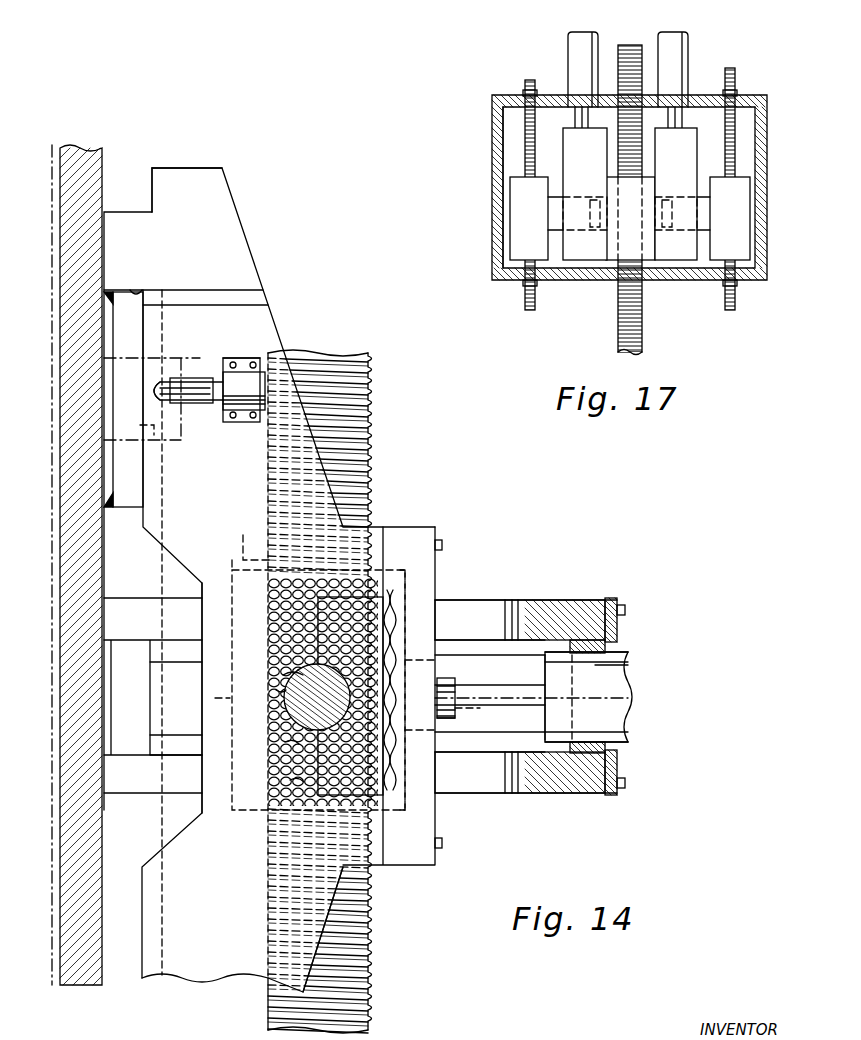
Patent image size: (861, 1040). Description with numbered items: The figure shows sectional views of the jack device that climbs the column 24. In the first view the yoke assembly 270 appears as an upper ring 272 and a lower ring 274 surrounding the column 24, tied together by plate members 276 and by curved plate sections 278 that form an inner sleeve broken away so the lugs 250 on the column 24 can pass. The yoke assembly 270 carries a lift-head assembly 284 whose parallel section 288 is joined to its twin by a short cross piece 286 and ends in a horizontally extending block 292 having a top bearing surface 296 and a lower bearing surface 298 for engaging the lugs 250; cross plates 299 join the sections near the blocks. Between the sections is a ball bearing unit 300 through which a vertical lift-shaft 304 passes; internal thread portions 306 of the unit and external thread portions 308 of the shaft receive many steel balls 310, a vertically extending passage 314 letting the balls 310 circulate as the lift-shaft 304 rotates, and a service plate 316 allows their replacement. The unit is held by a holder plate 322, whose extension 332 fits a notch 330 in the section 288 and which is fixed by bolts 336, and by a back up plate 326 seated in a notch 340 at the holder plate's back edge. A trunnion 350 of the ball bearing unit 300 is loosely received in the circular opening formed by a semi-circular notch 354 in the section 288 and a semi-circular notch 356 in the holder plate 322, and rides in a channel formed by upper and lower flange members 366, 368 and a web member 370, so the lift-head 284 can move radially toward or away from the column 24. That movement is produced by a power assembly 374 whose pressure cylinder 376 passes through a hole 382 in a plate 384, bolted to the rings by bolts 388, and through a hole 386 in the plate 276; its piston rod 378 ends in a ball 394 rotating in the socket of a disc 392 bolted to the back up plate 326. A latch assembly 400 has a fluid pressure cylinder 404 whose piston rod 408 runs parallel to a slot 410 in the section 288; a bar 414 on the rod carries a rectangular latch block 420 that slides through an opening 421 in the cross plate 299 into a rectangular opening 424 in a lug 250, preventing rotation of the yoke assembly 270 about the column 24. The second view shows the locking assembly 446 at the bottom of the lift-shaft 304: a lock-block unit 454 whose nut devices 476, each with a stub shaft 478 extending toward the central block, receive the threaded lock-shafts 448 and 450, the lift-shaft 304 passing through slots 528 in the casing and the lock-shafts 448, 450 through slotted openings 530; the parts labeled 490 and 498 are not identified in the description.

In FIG. 14, the column 24 is at (52, 356).
In FIG. 14, the lug 250 is at (125, 507).
In FIG. 14, the yoke assembly 270 is at (498, 597).
In FIG. 14, the upper ring 272 is at (538, 600).
In FIG. 14, the lower ring 274 is at (578, 793).
In FIG. 14, the plate member 276 is at (601, 644).
In FIG. 14, the curved plate section 278 is at (153, 695).
In FIG. 14, the lift-head assembly 284 is at (235, 217).
In FIG. 14, the cross piece 286 is at (220, 698).
In FIG. 14, the parallel section 288 is at (228, 643).
In FIG. 14, the block 292 is at (173, 211).
In FIG. 14, the top bearing surface 296 is at (143, 212).
In FIG. 14, the lower bearing surface 298 is at (144, 290).
In FIG. 14, the cross plate 299 is at (162, 456).
In FIG. 14, the ball bearing unit 300 is at (245, 550).
In FIG. 14, the lift-shaft 304 is at (368, 418).
In FIG. 17, the lift-shaft 304 is at (641, 322).
In FIG. 14, the internal thread portion 306 is at (268, 612).
In FIG. 14, the external thread portion 308 is at (368, 894).
In FIG. 14, the steel ball 310 is at (396, 634).
In FIG. 14, the vertically extending passage 314 is at (404, 602).
In FIG. 14, the service plate 316 is at (404, 578).
In FIG. 14, the holder plate 322 is at (350, 696).
In FIG. 14, the back up plate 326 is at (450, 680).
In FIG. 14, the notch 330 is at (285, 742).
In FIG. 14, the extension 332 is at (290, 780).
In FIG. 14, the bolt 336 is at (442, 546).
In FIG. 14, the notch 340 is at (435, 662).
In FIG. 14, the trunnion member 350 is at (278, 690).
In FIG. 14, the semi-circular notch 354 is at (283, 675).
In FIG. 14, the semi-circular notch 356 is at (346, 688).
In FIG. 14, the upper flange member 366 is at (347, 649).
In FIG. 14, the lower flange member 368 is at (347, 745).
In FIG. 14, the web member 370 is at (510, 730).
In FIG. 14, the power assembly 374 is at (638, 687).
In FIG. 14, the pressure cylinder 376 is at (610, 708).
In FIG. 14, the piston rod 378 is at (480, 698).
In FIG. 14, the hole 382 is at (616, 655).
In FIG. 14, the plate 384 is at (617, 624).
In FIG. 14, the hole 386 is at (606, 654).
In FIG. 14, the bolt 388 is at (623, 610).
In FIG. 14, the disc 392 is at (455, 720).
In FIG. 14, the ball 394 is at (477, 708).
In FIG. 14, the latch assembly 400 is at (244, 356).
In FIG. 14, the fluid pressure cylinder 404 is at (223, 418).
In FIG. 14, the piston rod 408 is at (187, 398).
In FIG. 14, the slot 410 is at (190, 378).
In FIG. 14, the bar 414 is at (163, 400).
In FIG. 14, the latch block 420 is at (230, 364).
In FIG. 14, the rectangular opening 421 is at (157, 430).
In FIG. 14, the rectangular opening 424 is at (128, 358).
In FIG. 17, the locking assembly 446 is at (484, 138).
In FIG. 17, the lock-shaft 448 is at (524, 76).
In FIG. 17, the lock-shaft 450 is at (735, 70).
In FIG. 17, the lock-block unit 454 is at (491, 126).
In FIG. 17, the nut device 476 is at (513, 188).
In FIG. 17, the stub shaft 478 is at (556, 228).
In FIG. 17, the carriage block 490 is at (586, 260).
In FIG. 17, the post 498 is at (568, 40).
In FIG. 17, the slot 528 is at (648, 112).
In FIG. 17, the slotted opening 530 is at (518, 95).